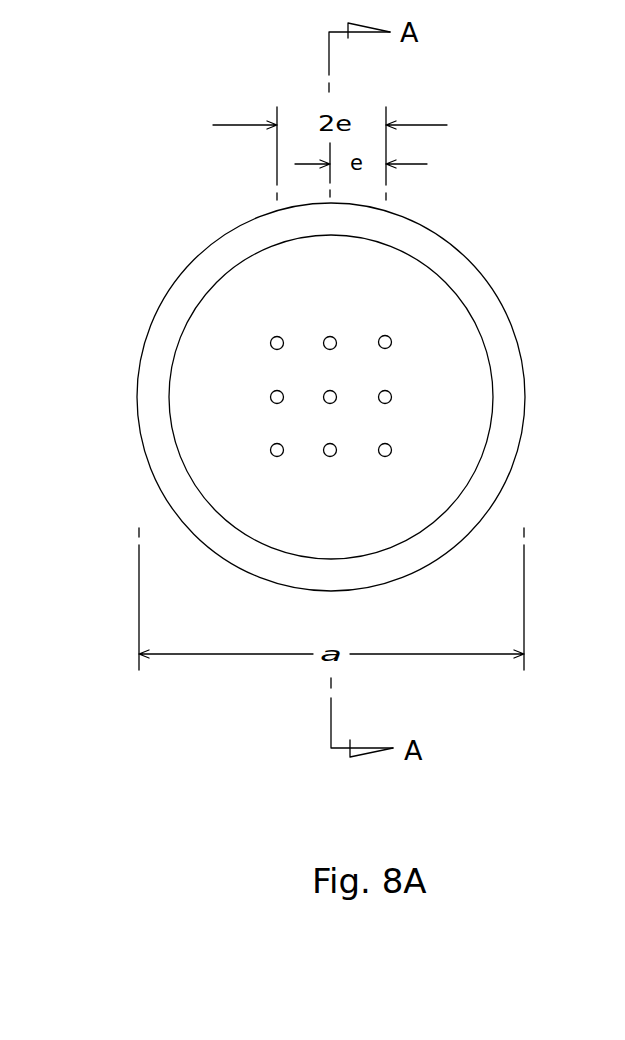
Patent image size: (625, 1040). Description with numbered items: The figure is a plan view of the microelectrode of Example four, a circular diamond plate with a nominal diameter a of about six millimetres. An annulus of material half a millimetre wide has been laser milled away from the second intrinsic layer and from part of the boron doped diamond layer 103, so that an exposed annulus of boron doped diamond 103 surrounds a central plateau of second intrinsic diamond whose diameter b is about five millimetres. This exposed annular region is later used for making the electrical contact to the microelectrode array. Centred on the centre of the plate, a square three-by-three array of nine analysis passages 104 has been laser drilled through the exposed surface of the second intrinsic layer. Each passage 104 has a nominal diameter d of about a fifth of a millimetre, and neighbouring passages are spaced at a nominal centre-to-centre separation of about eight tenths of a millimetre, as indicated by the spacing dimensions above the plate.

The boron doped diamond layer 103 is at (285, 397).
The analysis passages 104 is at (268, 350).
The nominal diameter a is at (153, 322).
The plateau diameter b is at (175, 447).
The passage diameter d is at (250, 422).